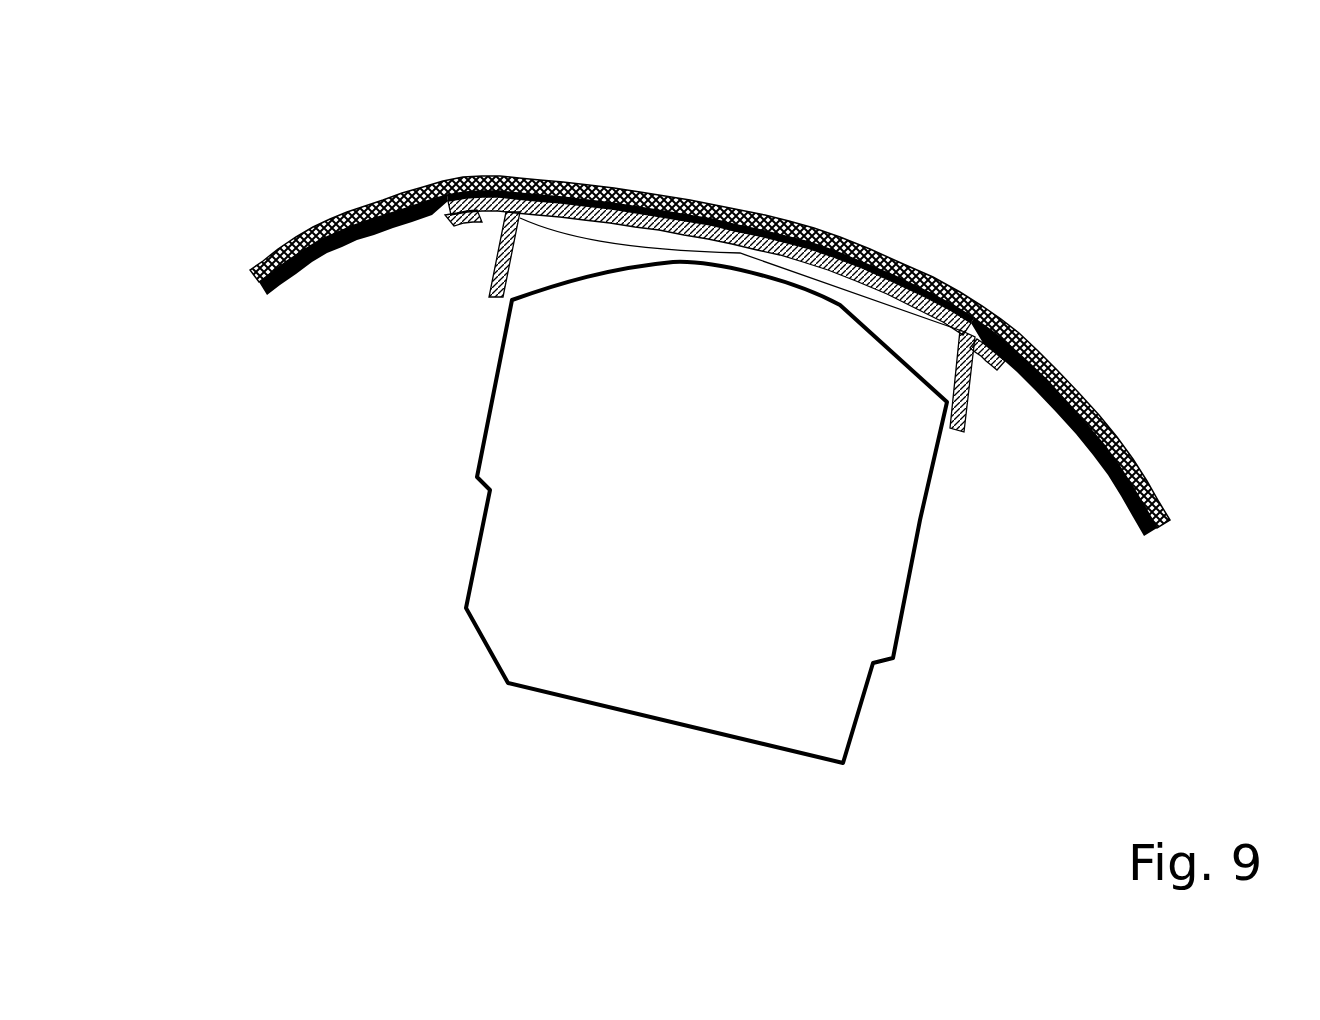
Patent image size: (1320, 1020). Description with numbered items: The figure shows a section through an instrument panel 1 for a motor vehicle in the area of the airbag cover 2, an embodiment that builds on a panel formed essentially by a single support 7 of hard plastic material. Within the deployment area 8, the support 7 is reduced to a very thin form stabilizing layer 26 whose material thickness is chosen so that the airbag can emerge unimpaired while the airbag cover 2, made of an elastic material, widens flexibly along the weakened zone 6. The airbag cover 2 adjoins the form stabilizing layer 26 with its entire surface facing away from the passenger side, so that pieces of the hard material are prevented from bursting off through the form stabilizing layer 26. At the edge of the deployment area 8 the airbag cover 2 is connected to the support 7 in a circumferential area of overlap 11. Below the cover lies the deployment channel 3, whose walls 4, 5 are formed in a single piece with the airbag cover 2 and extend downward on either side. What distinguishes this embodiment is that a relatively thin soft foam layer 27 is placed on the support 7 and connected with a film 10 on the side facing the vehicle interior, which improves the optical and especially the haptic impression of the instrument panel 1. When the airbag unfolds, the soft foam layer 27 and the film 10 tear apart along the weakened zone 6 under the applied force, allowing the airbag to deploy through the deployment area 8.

The instrument panel 1 is at (273, 202).
The airbag cover 2 is at (694, 300).
The deployment channel 3 is at (732, 489).
The wall 4 is at (490, 270).
The wall 5 is at (968, 400).
The weakened zone 6 is at (771, 215).
The support 7 is at (1118, 503).
The deployment area 8 is at (880, 230).
The film 10 is at (795, 236).
The area of overlap 11 is at (462, 236).
The form stabilizing layer 26 is at (565, 183).
The soft foam layer 27 is at (694, 300).